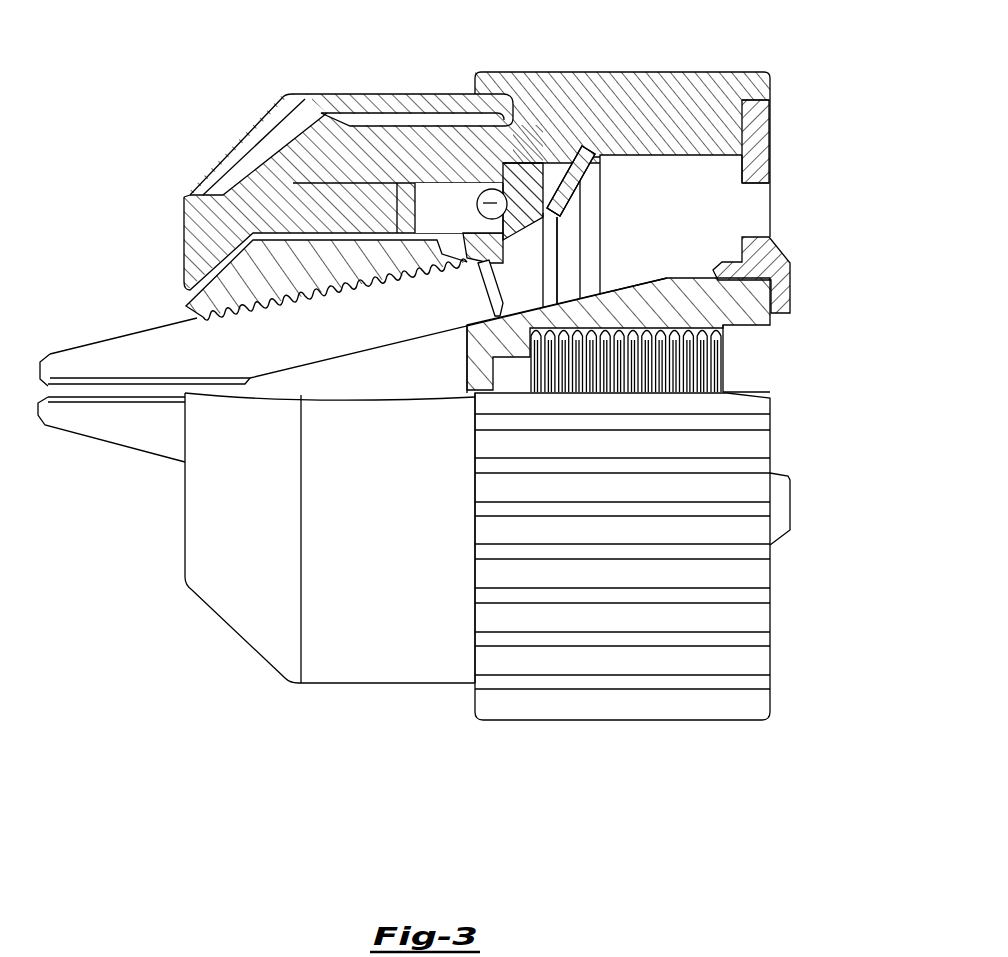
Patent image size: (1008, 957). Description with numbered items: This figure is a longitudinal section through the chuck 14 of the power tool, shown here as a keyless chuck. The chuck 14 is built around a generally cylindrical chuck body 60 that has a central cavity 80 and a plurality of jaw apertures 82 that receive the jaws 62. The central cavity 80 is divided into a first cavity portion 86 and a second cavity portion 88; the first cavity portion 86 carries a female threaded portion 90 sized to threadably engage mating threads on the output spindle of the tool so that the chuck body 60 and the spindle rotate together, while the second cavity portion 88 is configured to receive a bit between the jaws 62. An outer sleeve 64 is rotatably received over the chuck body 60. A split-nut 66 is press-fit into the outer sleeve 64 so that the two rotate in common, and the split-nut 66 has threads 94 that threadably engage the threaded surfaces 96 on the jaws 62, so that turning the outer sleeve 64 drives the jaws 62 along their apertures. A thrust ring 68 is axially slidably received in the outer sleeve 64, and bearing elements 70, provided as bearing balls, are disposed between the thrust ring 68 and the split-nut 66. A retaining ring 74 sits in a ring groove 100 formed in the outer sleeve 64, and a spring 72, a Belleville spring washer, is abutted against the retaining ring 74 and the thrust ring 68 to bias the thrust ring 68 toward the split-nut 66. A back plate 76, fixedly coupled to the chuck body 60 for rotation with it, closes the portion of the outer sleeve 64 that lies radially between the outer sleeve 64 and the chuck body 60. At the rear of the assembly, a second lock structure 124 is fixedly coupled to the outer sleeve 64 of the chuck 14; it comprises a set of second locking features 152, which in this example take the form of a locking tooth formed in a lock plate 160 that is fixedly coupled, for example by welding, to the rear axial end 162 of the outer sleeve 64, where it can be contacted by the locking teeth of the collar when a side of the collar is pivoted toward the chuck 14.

The chuck 14 is at (406, 733).
The chuck body 60 is at (743, 310).
The jaws 62 is at (56, 355).
The outer sleeve 64 is at (730, 83).
The split-nut 66 is at (430, 193).
The thrust ring 68 is at (523, 177).
The bearing elements 70 is at (497, 200).
The spring 72 is at (563, 207).
The retaining ring 74 is at (585, 178).
The back plate 76 is at (773, 270).
The central cavity 80 is at (388, 395).
The jaw apertures 82 is at (520, 320).
The first cavity portion 86 is at (776, 365).
The second cavity portion 88 is at (308, 395).
The female threaded portion 90 is at (680, 384).
The threads 94 is at (503, 235).
The threaded surfaces 96 is at (237, 323).
The ring groove 100 is at (595, 150).
The second lock structure 124 is at (758, 133).
The second locking features 152 is at (758, 176).
The lock plate 160 is at (757, 108).
The rear axial end 162 is at (771, 674).